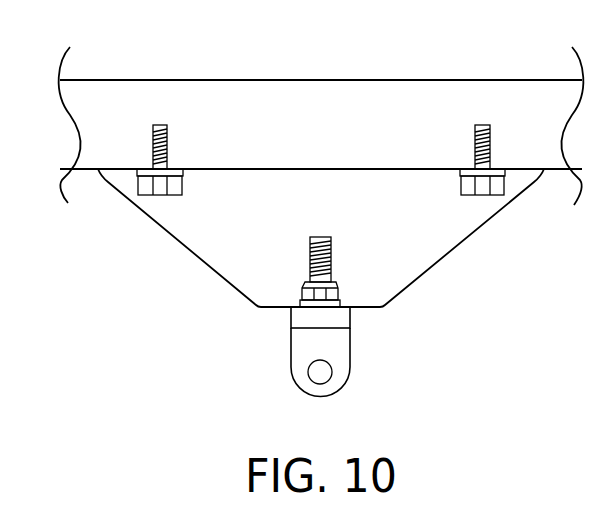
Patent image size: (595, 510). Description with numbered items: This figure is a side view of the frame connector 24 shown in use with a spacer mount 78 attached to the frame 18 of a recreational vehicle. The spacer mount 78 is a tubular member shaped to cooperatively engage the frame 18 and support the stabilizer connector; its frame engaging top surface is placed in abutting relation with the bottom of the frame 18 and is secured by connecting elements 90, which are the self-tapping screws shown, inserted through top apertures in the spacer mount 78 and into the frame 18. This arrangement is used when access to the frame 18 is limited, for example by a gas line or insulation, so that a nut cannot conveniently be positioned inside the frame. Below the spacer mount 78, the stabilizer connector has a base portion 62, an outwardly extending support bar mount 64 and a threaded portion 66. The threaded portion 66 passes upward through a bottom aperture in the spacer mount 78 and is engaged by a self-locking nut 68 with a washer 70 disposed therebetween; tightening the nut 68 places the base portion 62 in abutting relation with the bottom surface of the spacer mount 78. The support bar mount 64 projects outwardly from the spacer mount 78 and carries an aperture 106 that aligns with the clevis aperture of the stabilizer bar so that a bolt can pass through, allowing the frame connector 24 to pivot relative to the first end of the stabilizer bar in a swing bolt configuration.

The frame 18 is at (310, 93).
The connecting elements 90 is at (126, 198).
The spacer mount 78 is at (188, 229).
The threaded portion 66 is at (332, 250).
The self-locking nut 68 is at (340, 292).
The washer 70 is at (302, 305).
The frame connector 24 is at (342, 357).
The base portion 62 is at (291, 318).
The support bar mount 64 is at (291, 368).
The aperture 106 is at (330, 375).